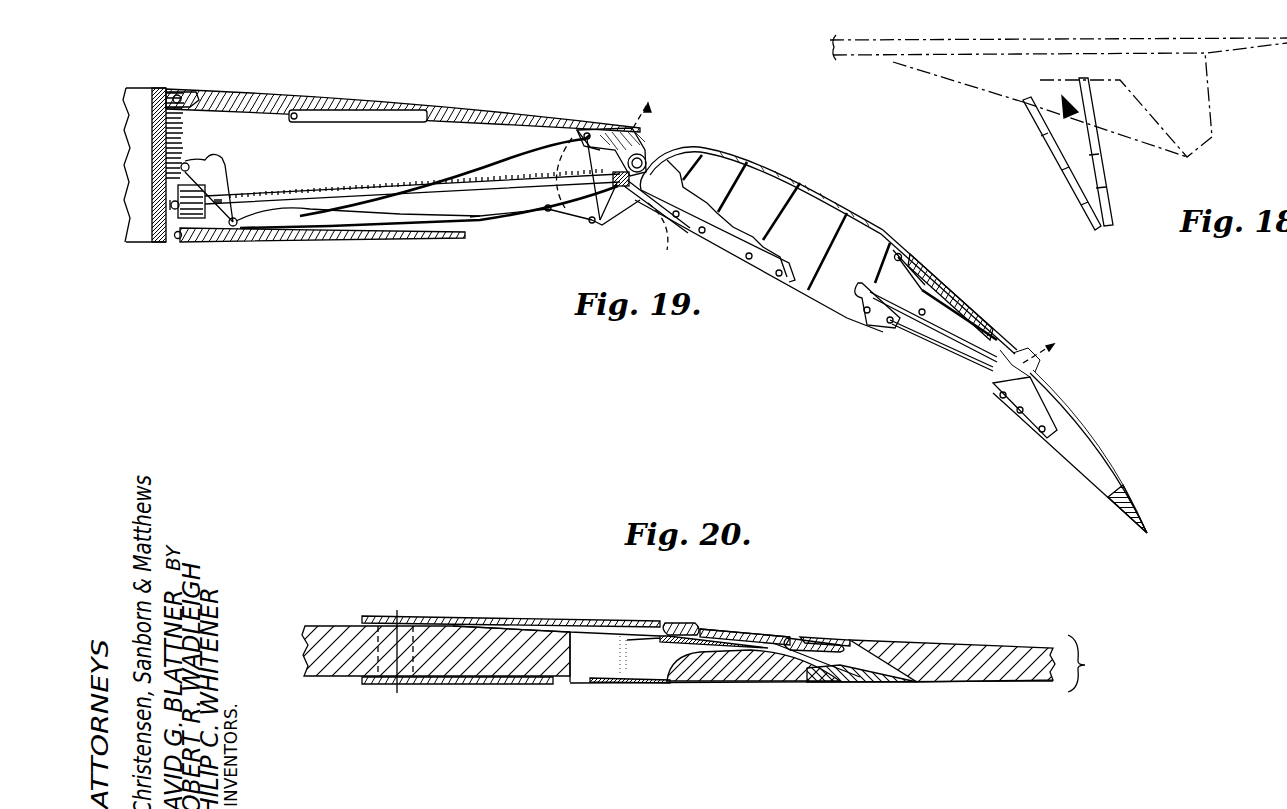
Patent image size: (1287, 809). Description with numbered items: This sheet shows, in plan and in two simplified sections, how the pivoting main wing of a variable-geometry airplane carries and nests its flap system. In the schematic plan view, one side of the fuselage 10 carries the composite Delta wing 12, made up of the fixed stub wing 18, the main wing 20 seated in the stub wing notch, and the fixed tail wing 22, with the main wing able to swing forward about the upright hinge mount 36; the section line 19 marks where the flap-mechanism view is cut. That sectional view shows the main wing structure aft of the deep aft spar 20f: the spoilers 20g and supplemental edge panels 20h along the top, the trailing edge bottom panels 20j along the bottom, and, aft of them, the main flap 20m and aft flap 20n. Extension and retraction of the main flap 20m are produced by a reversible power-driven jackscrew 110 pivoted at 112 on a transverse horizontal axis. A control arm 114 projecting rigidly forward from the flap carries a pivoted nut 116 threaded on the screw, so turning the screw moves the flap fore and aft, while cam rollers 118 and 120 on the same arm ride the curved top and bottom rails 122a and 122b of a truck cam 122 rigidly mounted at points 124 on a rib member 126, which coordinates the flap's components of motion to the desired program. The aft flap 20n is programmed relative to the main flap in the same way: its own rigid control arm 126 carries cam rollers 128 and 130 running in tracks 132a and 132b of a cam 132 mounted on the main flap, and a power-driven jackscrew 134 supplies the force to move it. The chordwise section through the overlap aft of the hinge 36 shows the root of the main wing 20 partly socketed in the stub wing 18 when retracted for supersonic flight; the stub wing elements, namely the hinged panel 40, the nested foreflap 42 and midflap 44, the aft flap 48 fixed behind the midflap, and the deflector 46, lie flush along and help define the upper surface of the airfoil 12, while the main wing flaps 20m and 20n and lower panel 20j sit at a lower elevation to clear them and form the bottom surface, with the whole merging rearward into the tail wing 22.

In FIG. 18, the fuselage 10 is at (866, 44).
In FIG. 20, the wing 12 is at (1090, 663).
In FIG. 20, the stub wing 18 is at (468, 615).
In FIG. 18, the section line 19- 19 is at (1047, 97).
In FIG. 19, the main wing 20 is at (135, 245).
In FIG. 18, the main wing 20 is at (1068, 158).
In FIG. 20, the main wing 20 is at (316, 680).
In FIG. 20, the aft spar 20f is at (610, 687).
In FIG. 19, the spoilers 20g is at (330, 92).
In FIG. 20, the spoilers 20g is at (650, 624).
In FIG. 19, the supplemental edge panels 20h is at (482, 108).
In FIG. 20, the supplemental edge panels 20h is at (672, 662).
In FIG. 19, the trailing edge bottom panels 20j is at (313, 240).
In FIG. 19, the main flap 20m is at (790, 172).
In FIG. 20, the main flap 20m is at (738, 684).
In FIG. 19, the aft flap 20n is at (1113, 456).
In FIG. 20, the aft flap 20n is at (851, 684).
In FIG. 18, the tail wing 22 is at (1175, 100).
In FIG. 20, the tail wing 22 is at (937, 640).
In FIG. 20, the hinge mount 36 is at (427, 612).
In FIG. 20, the panel 40 is at (608, 627).
In FIG. 20, the foreflap 42 is at (689, 622).
In FIG. 20, the midflap 44 is at (745, 629).
In FIG. 20, the deflector 46 is at (840, 640).
In FIG. 20, the aft flap 48 is at (800, 637).
In FIG. 19, the jackscrew 110 is at (488, 196).
In FIG. 19, the pivot 112 is at (173, 212).
In FIG. 19, the control arm 114 is at (641, 156).
In FIG. 19, the nut 116 is at (645, 204).
In FIG. 19, the cam roller 118 is at (659, 105).
In FIG. 19, the cam roller 120 is at (626, 204).
In FIG. 19, the truck cam 122 is at (520, 222).
In FIG. 19, the top rail 122a is at (513, 168).
In FIG. 19, the bottom rail 122b is at (548, 212).
In FIG. 19, the mounting points 124 is at (222, 173).
In FIG. 19, the rib member / control arm 126 is at (245, 128).
In FIG. 19, the cam roller 128 is at (1057, 348).
In FIG. 19, the cam roller 130 is at (1005, 412).
In FIG. 19, the cam 132 is at (928, 342).
In FIG. 19, the cam track 132a is at (978, 332).
In FIG. 19, the cam track 132b is at (912, 330).
In FIG. 19, the jackscrew 134 is at (958, 354).